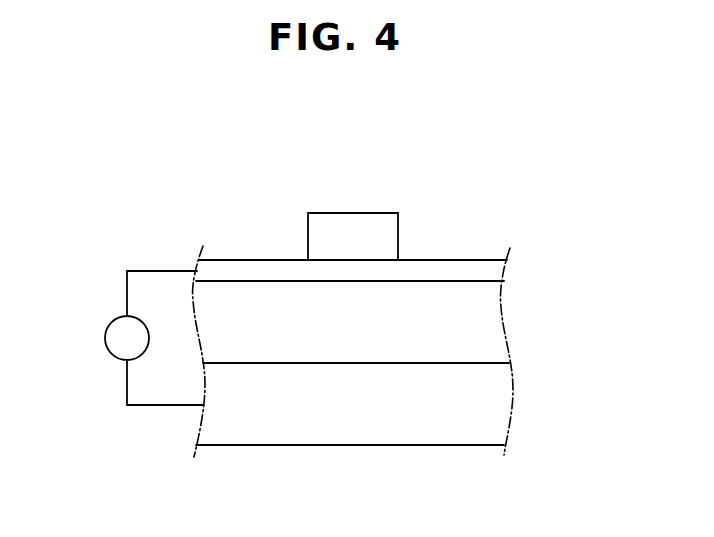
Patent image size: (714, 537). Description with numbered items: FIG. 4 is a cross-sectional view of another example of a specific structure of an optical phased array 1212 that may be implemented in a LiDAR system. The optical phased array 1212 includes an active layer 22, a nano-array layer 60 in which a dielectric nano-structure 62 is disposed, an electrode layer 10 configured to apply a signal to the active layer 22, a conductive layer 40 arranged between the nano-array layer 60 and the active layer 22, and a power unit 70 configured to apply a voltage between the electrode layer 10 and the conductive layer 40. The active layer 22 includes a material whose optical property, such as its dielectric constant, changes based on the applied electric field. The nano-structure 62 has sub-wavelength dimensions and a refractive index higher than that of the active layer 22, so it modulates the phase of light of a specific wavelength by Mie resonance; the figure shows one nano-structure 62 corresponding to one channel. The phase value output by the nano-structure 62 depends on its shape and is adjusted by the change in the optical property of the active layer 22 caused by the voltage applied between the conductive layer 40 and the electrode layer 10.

The optical phased array 1212 is at (529, 149).
The electrode layer 10 is at (490, 403).
The active layer 22 is at (490, 322).
The conductive layer 40 is at (490, 268).
The nano-array layer 60 is at (402, 236).
The dielectric nano-structure 62 is at (356, 225).
The power unit 70 is at (105, 338).